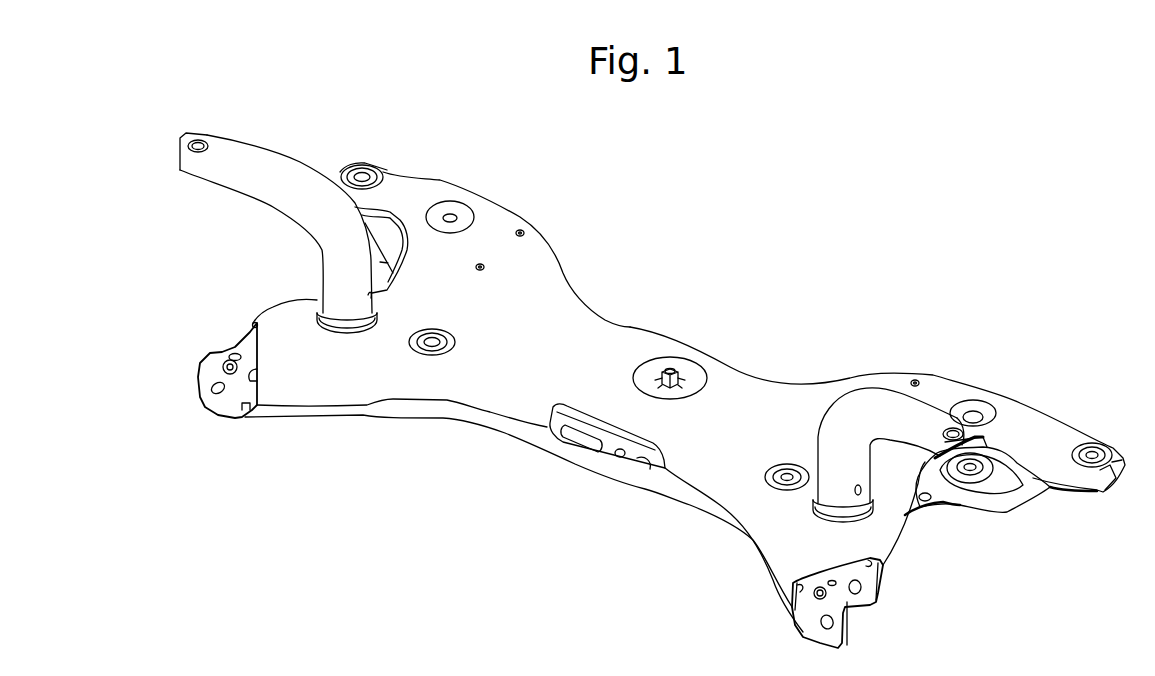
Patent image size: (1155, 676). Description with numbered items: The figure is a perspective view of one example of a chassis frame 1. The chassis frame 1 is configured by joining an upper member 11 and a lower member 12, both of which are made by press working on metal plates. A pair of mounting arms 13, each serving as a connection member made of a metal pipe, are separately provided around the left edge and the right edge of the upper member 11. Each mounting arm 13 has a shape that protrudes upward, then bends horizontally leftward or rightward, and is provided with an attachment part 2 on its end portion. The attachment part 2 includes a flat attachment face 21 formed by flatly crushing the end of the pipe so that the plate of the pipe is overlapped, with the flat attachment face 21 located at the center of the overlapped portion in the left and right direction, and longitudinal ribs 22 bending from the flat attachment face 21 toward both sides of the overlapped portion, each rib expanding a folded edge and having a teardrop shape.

The chassis frame 1 is at (678, 333).
The attachment part 2 is at (213, 134).
The upper member 11 is at (570, 282).
The lower member 12 is at (453, 413).
The mounting arm 13 is at (310, 230).
The flat attachment face 21 is at (970, 477).
The longitudinal rib 22 is at (933, 503).